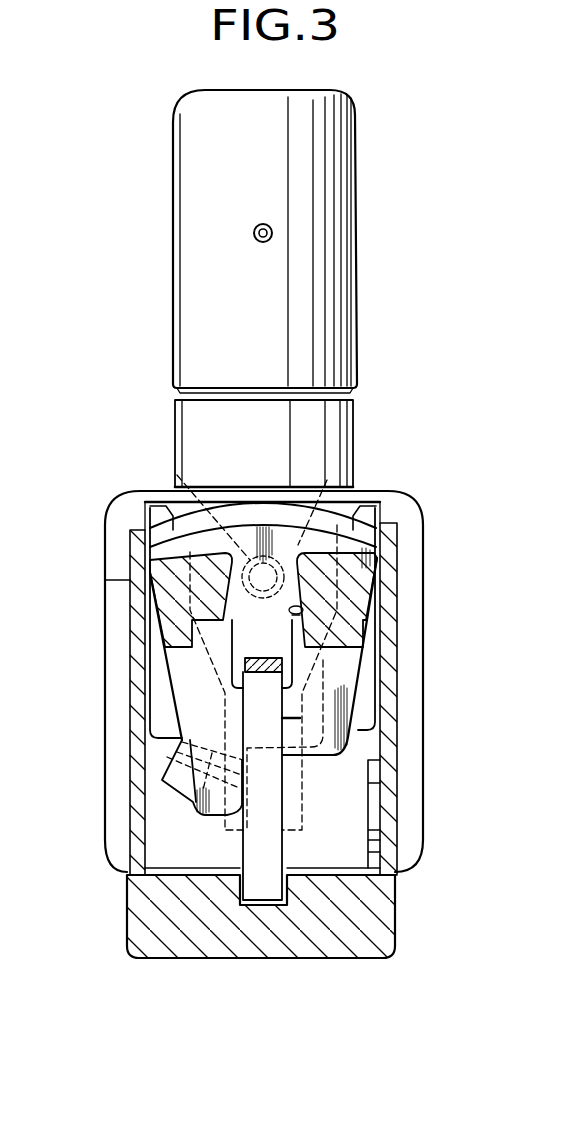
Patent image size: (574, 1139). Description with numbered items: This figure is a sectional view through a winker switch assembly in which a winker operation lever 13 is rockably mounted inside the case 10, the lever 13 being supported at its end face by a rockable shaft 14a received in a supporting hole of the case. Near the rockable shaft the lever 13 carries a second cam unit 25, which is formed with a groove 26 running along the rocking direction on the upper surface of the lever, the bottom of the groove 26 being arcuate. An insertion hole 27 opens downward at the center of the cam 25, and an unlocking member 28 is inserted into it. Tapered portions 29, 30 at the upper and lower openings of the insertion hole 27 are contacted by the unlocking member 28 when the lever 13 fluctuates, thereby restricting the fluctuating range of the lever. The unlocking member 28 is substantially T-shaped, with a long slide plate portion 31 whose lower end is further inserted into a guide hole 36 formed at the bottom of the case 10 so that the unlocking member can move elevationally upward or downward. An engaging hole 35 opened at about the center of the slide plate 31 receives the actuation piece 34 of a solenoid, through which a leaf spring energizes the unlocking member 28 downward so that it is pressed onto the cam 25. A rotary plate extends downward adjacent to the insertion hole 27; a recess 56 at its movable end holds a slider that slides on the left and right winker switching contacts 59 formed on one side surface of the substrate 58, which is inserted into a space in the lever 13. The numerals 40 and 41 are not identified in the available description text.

The case 10 is at (398, 912).
The winker operation lever 13 is at (372, 685).
The rockable shaft 14a is at (177, 475).
The second cam unit 25 is at (397, 577).
The groove 26 is at (350, 528).
The insertion hole 27 is at (300, 617).
The unlocking member 28 is at (300, 718).
The tapered portion 29 is at (298, 550).
The tapered portion 30 is at (293, 607).
The slide plate portion 31 is at (345, 550).
The actuation piece 34 is at (262, 690).
The engaging hole 35 is at (247, 667).
The guide hole 36 is at (272, 903).
The neck collar 40 is at (355, 428).
The cap 41 is at (357, 208).
The recess 56 is at (193, 803).
The substrate 58 is at (348, 823).
The winker switching contacts 59 is at (172, 776).